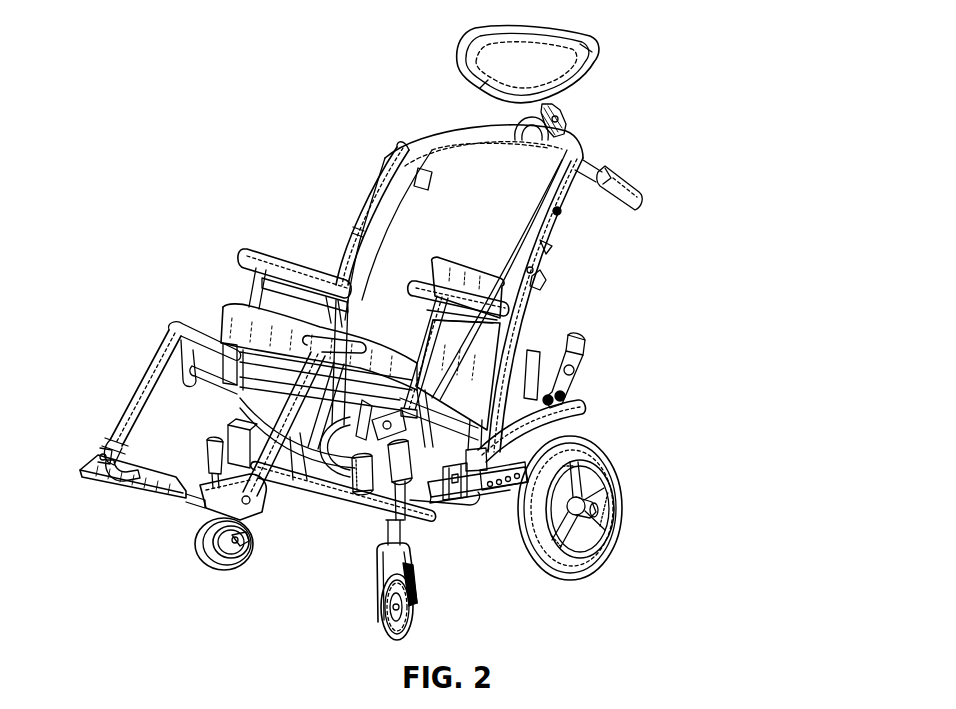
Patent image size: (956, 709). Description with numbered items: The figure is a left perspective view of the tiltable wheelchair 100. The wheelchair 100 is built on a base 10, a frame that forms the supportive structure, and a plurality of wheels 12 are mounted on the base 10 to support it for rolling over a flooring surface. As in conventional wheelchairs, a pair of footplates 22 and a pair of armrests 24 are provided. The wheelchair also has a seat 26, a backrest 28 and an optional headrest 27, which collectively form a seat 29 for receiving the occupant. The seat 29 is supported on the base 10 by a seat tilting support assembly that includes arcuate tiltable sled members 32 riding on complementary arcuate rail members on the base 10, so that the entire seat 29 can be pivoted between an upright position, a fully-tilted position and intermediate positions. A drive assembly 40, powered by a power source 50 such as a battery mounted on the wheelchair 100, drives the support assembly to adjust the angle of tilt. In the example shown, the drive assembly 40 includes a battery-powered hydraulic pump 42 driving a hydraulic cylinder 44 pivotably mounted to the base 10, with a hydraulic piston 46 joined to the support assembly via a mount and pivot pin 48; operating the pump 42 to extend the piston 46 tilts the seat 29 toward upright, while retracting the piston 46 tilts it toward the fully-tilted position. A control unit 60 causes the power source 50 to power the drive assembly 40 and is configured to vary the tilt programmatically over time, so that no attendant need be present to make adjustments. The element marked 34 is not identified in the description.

The wheelchair 100 is at (317, 170).
The base 10 is at (467, 490).
The wheels 12 is at (207, 555).
The footplates 22 is at (152, 473).
The armrests 24 is at (417, 277).
The seat 26 is at (235, 313).
The headrest 27 is at (580, 48).
The backrest 28 is at (525, 170).
The seat 29 is at (560, 212).
The arcuate tiltable sled members 32 is at (543, 427).
The pivot bracket 34 is at (573, 408).
The drive assembly 40 is at (422, 609).
The hydraulic pump 42 is at (357, 473).
The hydraulic cylinder 44 is at (380, 483).
The hydraulic piston 46 is at (395, 472).
The mount and pivot pin 48 is at (407, 467).
The power source 50 is at (227, 433).
The control unit 60 is at (463, 270).